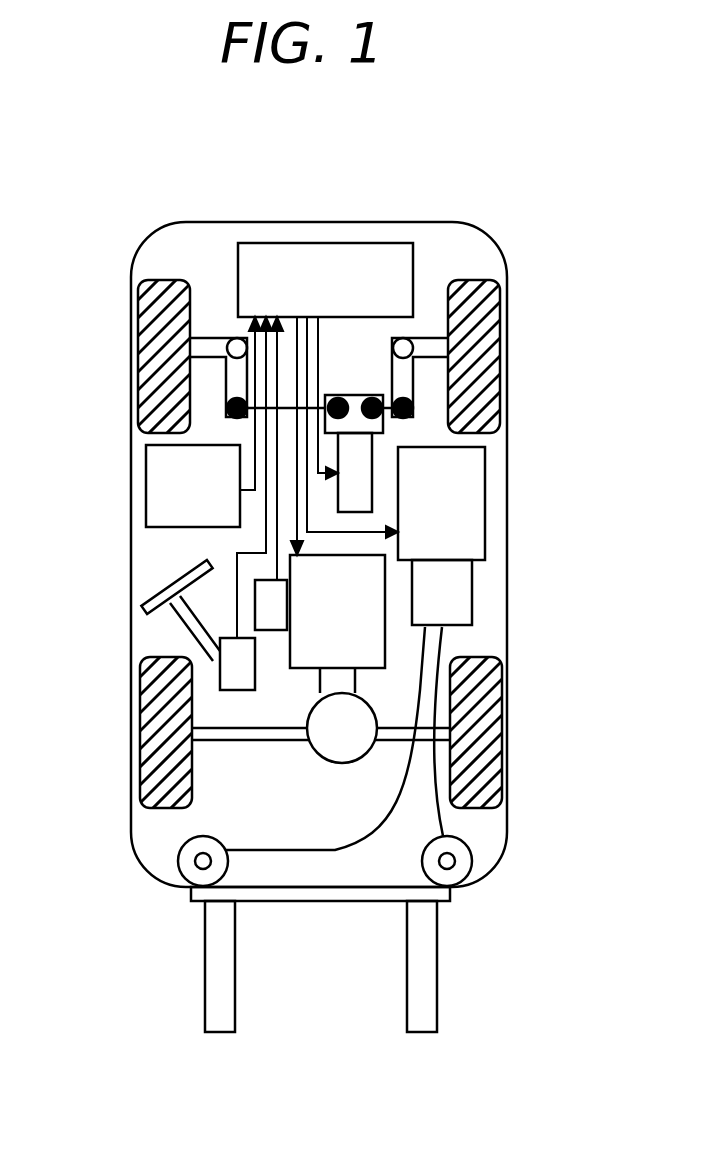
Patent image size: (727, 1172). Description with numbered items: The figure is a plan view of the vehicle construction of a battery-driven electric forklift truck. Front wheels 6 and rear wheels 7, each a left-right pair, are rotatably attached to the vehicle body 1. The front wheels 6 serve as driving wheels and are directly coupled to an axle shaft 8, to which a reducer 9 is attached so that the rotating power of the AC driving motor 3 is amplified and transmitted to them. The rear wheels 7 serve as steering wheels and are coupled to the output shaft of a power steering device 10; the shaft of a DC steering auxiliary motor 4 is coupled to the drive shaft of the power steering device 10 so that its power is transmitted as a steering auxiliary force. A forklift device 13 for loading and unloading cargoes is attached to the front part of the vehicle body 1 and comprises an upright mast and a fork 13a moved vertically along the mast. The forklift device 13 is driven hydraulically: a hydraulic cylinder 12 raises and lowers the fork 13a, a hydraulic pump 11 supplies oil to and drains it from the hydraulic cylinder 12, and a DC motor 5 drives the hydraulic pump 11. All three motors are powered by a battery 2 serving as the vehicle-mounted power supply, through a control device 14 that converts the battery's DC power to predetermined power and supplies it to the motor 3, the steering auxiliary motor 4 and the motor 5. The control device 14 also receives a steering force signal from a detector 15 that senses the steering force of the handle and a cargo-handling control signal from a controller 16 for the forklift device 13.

The vehicle body 1 is at (155, 232).
The battery 2 is at (163, 492).
The motor 3 is at (358, 637).
The steering auxiliary motor 4 is at (365, 457).
The motor 5 is at (470, 502).
The front wheels 6 is at (155, 722).
The rear wheels 7 is at (152, 360).
The axle shaft 8 is at (283, 743).
The reducer 9 is at (343, 753).
The power steering device 10 is at (428, 347).
The hydraulic pump 11 is at (458, 587).
The hydraulic cylinder 12 is at (199, 863).
The forklift device 13 is at (273, 903).
The fork 13a is at (217, 975).
The control device 14 is at (312, 258).
The detector 15 is at (233, 668).
The controller 16 is at (270, 603).